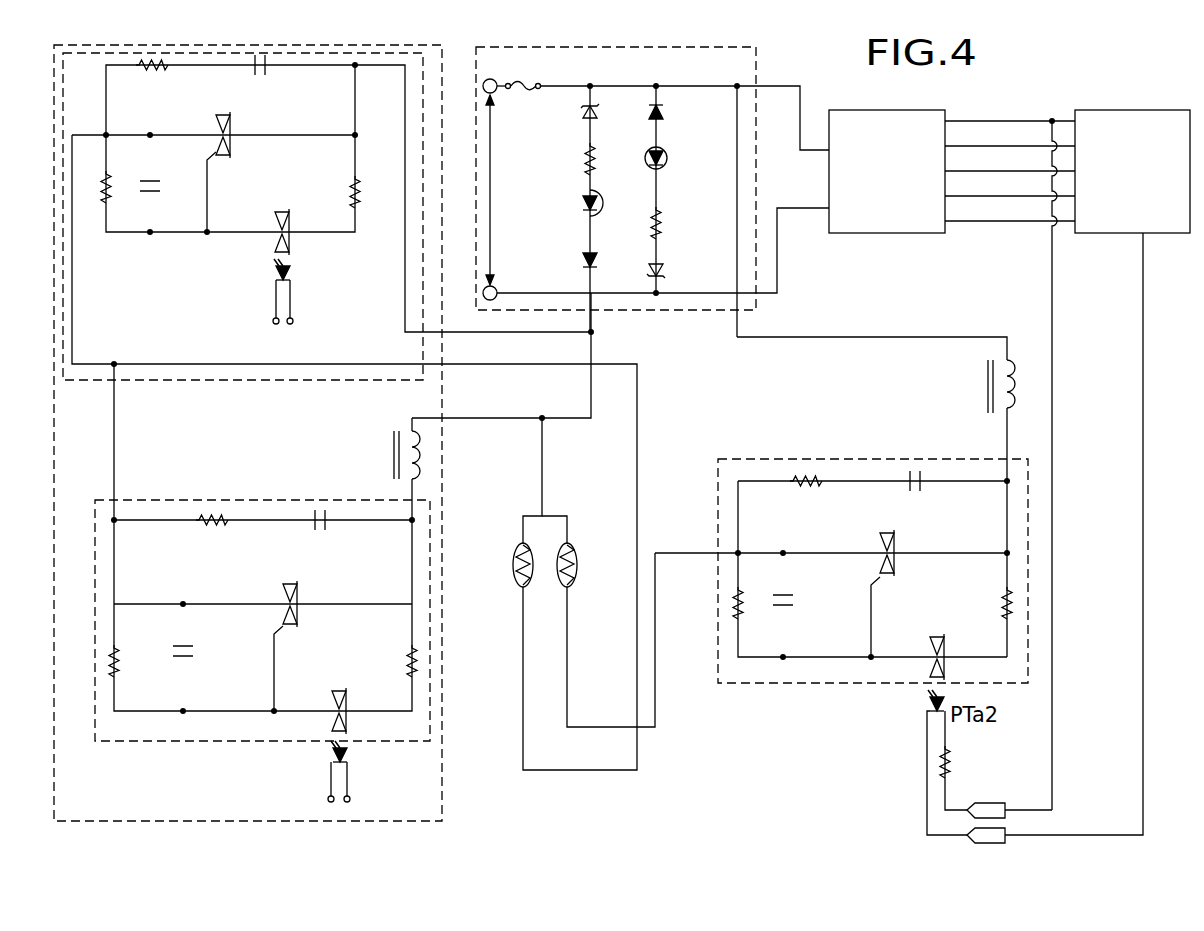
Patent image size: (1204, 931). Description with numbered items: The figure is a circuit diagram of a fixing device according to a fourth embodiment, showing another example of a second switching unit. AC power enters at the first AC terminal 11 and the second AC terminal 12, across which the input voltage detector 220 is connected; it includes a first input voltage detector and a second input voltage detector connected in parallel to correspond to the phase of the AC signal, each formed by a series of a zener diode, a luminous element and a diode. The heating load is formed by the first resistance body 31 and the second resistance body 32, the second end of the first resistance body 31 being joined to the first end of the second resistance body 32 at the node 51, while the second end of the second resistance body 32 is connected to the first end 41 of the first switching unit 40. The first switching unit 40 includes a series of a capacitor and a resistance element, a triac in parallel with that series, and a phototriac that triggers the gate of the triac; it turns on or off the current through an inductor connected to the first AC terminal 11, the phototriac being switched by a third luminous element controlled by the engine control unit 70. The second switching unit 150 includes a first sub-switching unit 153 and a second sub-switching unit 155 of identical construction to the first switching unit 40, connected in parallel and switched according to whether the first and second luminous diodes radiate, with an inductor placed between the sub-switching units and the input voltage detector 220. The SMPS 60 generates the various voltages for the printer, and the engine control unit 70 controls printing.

The first AC terminal 11 is at (500, 82).
The second AC terminal 12 is at (525, 286).
The first resistance body 31 is at (518, 542).
The second resistance body 32 is at (575, 542).
The first switching unit 40 is at (841, 455).
The first end of the first switching unit 41 is at (684, 551).
The node 51 is at (483, 364).
The SMPS 60 is at (883, 236).
The engine control unit 70 is at (1105, 236).
The second switching unit 150 is at (444, 800).
The first sub-switching unit 153 is at (175, 382).
The second sub-switching unit 155 is at (266, 499).
The input voltage detector 220 is at (638, 234).